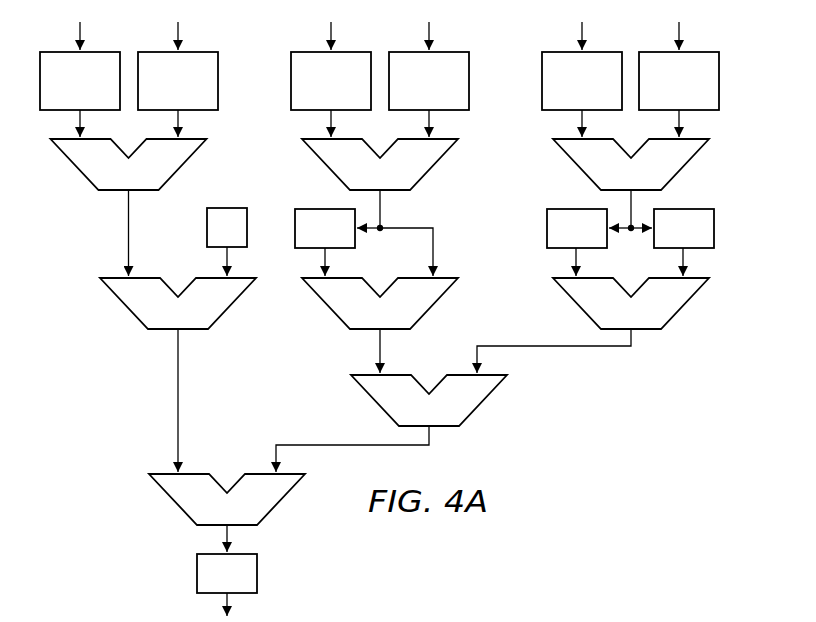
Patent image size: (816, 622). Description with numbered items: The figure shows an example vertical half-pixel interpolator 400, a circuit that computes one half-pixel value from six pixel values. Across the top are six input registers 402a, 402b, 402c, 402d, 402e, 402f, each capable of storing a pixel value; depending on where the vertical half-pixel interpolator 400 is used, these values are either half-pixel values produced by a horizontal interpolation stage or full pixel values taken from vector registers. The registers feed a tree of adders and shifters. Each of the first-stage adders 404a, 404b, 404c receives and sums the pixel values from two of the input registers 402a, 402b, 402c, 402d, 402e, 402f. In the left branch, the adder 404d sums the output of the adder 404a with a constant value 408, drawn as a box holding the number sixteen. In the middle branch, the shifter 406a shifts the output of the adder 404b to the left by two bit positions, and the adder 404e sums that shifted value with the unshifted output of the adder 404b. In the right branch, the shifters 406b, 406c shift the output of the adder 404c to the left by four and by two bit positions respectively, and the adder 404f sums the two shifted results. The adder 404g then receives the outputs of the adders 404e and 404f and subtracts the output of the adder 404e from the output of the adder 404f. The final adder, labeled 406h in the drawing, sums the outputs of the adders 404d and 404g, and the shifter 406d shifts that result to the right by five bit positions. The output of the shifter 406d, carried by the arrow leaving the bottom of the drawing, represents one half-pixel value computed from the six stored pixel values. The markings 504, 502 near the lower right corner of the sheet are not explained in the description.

The vertical half-pixel interpolator 400 is at (620, 432).
The input register 402a is at (102, 91).
The input register 402b is at (200, 91).
The input register 402c is at (353, 91).
The input register 402d is at (451, 91).
The input register 402e is at (604, 91).
The input register 402f is at (699, 91).
The adder 404a is at (187, 165).
The adder 404b is at (439, 165).
The adder 404c is at (690, 165).
The adder 404d is at (122, 303).
The adder 404e is at (325, 305).
The adder 404f is at (687, 303).
The adder 404g is at (487, 402).
The adder 406h is at (172, 498).
The shifter 406a is at (310, 209).
The shifter 406b is at (547, 232).
The shifter 406c is at (714, 232).
The shifter 406d is at (197, 572).
The constant value 408 is at (207, 228).
The sheet label 504 is at (662, 611).
The sheet label 502 is at (795, 621).